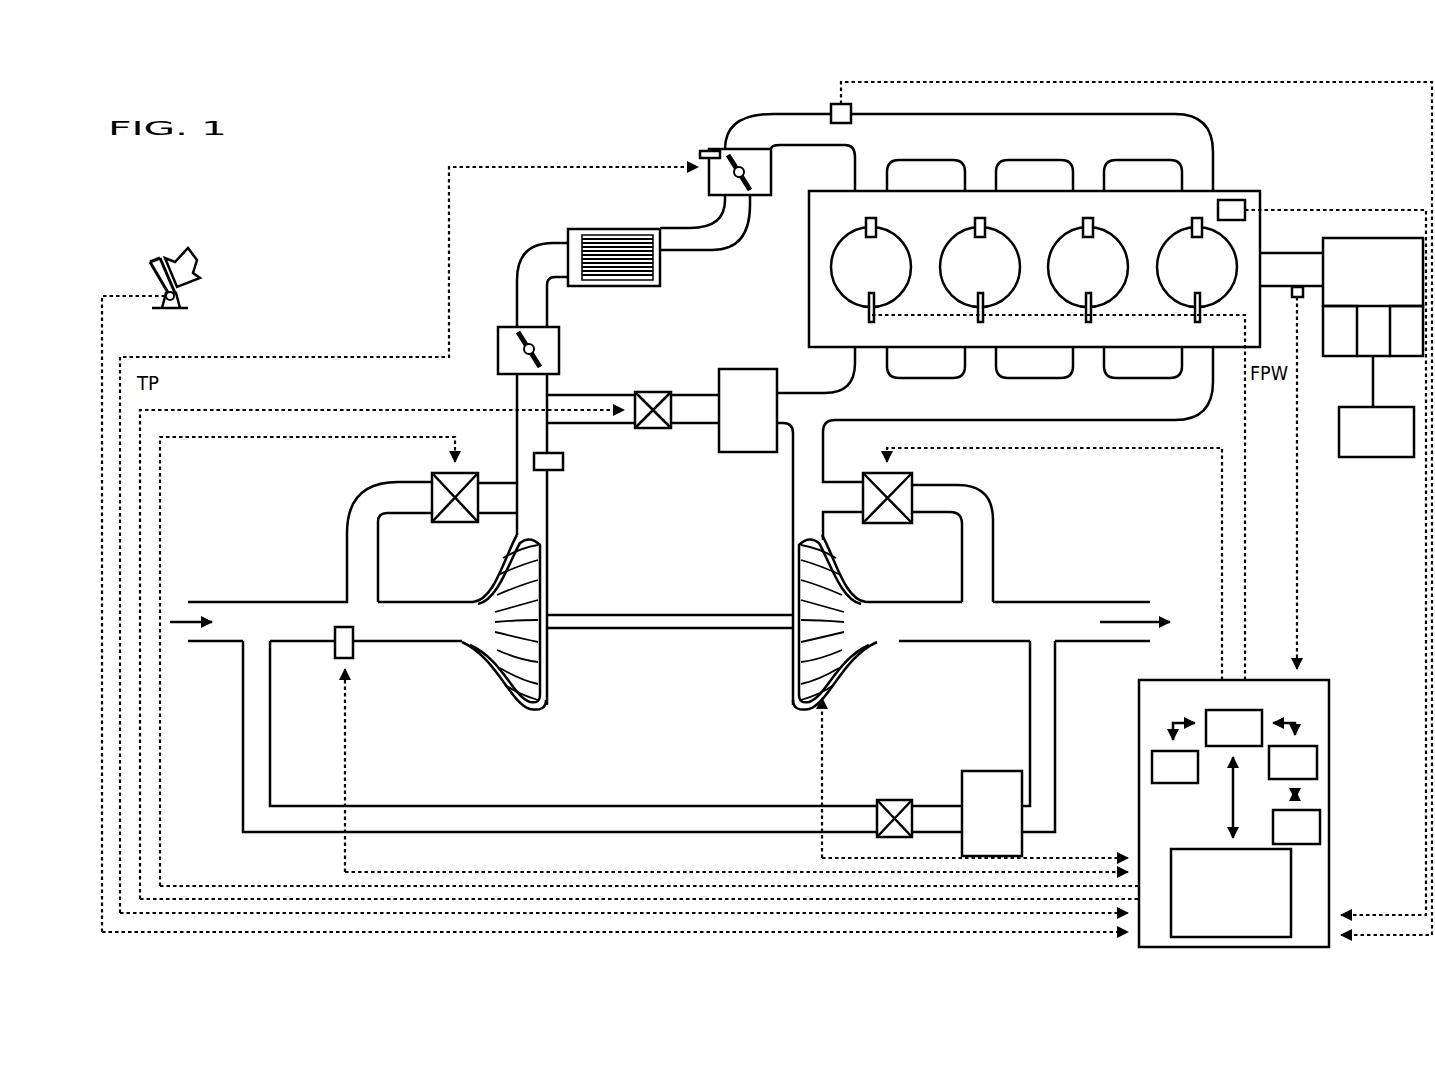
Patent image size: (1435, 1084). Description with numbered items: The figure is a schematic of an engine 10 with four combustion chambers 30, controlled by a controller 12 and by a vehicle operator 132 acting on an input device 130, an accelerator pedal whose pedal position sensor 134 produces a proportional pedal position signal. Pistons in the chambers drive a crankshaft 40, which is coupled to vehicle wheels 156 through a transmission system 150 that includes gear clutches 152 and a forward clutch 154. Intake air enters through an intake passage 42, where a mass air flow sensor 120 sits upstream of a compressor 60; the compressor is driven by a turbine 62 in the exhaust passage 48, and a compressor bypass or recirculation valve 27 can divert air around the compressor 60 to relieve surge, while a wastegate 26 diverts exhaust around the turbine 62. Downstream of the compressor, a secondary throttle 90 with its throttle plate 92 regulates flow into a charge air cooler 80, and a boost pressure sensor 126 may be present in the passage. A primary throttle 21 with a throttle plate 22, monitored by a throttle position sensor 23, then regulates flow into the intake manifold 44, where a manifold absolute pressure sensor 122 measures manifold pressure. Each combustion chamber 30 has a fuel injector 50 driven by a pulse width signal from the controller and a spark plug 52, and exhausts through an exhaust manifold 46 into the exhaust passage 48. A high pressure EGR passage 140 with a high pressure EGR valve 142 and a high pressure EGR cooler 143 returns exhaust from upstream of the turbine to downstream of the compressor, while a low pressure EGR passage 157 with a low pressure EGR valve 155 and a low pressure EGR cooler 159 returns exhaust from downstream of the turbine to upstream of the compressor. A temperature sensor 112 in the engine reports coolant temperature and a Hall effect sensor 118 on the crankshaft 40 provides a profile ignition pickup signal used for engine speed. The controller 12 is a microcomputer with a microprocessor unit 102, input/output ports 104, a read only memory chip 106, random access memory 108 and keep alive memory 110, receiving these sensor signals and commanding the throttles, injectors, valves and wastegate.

The engine 10 is at (1142, 223).
The controller 12 is at (1186, 828).
The primary throttle 21 is at (717, 147).
The throttle plate 22 is at (770, 185).
The throttle position sensor 23 is at (700, 152).
The wastegate 26 is at (912, 482).
The compressor bypass or recirculation valve 27 is at (432, 480).
The combustion chamber 30 is at (881, 278).
The crankshaft 40 is at (1280, 253).
The intake passage 42 is at (252, 633).
The intake manifold 44 is at (905, 146).
The exhaust manifold 46 is at (1043, 415).
The exhaust passage 48 is at (818, 466).
The fuel injector 50 is at (866, 318).
The spark plug 52 is at (878, 224).
The compressor 60 is at (495, 674).
The turbine 62 is at (830, 572).
The charge air cooler 80 is at (633, 229).
The secondary throttle 90 is at (507, 328).
The throttle plate 92 is at (542, 366).
The microprocessor unit 102 is at (1200, 718).
The input/output ports 104 is at (1276, 933).
The read only memory chip 106 is at (1152, 775).
The random access memory 108 is at (1312, 755).
The keep alive memory 110 is at (1315, 815).
The temperature sensor 112 is at (1238, 200).
The Hall effect sensor 118 is at (1295, 300).
The mass air flow sensor 120 is at (354, 650).
The MAP sensor 122 is at (851, 107).
The boost pressure sensor 126 is at (564, 465).
The input device 130 is at (152, 270).
The vehicle operator 132 is at (198, 259).
The pedal position sensor 134 is at (183, 298).
The high pressure EGR passage 140 is at (587, 394).
The high pressure EGR valve 142 is at (655, 392).
The high pressure EGR cooler 143 is at (766, 421).
The transmission system 150 is at (1388, 283).
The gear clutches 152 is at (1354, 347).
The forward clutch 154 is at (1421, 347).
The low pressure EGR valve 155 is at (888, 800).
The vehicle wheels 156 is at (1392, 440).
The low pressure EGR passage 157 is at (575, 805).
The low pressure EGR cooler 159 is at (1010, 823).